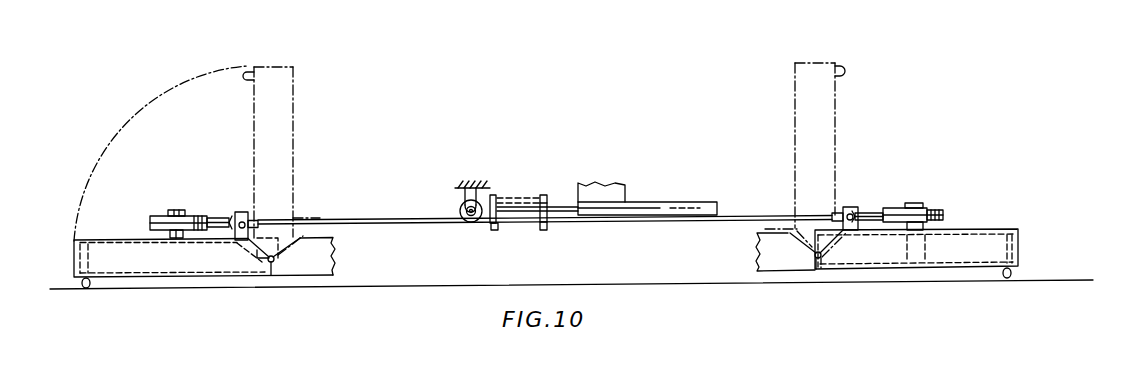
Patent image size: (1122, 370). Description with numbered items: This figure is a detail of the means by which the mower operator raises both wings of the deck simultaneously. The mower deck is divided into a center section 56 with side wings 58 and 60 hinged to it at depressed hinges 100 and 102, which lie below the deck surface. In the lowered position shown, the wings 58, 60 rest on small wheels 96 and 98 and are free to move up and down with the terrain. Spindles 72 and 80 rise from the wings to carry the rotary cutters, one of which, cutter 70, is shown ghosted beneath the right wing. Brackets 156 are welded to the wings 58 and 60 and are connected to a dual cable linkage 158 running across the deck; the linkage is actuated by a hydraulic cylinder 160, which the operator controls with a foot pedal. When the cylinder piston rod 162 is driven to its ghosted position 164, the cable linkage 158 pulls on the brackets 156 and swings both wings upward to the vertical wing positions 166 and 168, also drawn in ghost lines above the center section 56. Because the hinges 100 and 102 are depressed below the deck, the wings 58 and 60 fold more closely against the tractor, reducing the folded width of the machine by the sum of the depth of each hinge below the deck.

The center section 56 is at (312, 268).
The side wing 58 is at (108, 240).
The side wing 60 is at (1000, 230).
The rotary cutter 70 is at (940, 265).
The spindle 72 is at (177, 212).
The spindle 80 is at (917, 207).
The small wheel 96 is at (80, 281).
The small wheel 98 is at (1017, 275).
The depressed hinge 100 is at (270, 263).
The depressed hinge 102 is at (816, 262).
The bracket 156 is at (240, 216).
The dual cable linkage 158 is at (420, 227).
The hydraulic cylinder 160 is at (690, 198).
The cylinder piston rod 162 is at (518, 207).
The ghosted position 164 is at (548, 197).
The vertical wing position 166 is at (262, 117).
The vertical wing position 168 is at (835, 112).